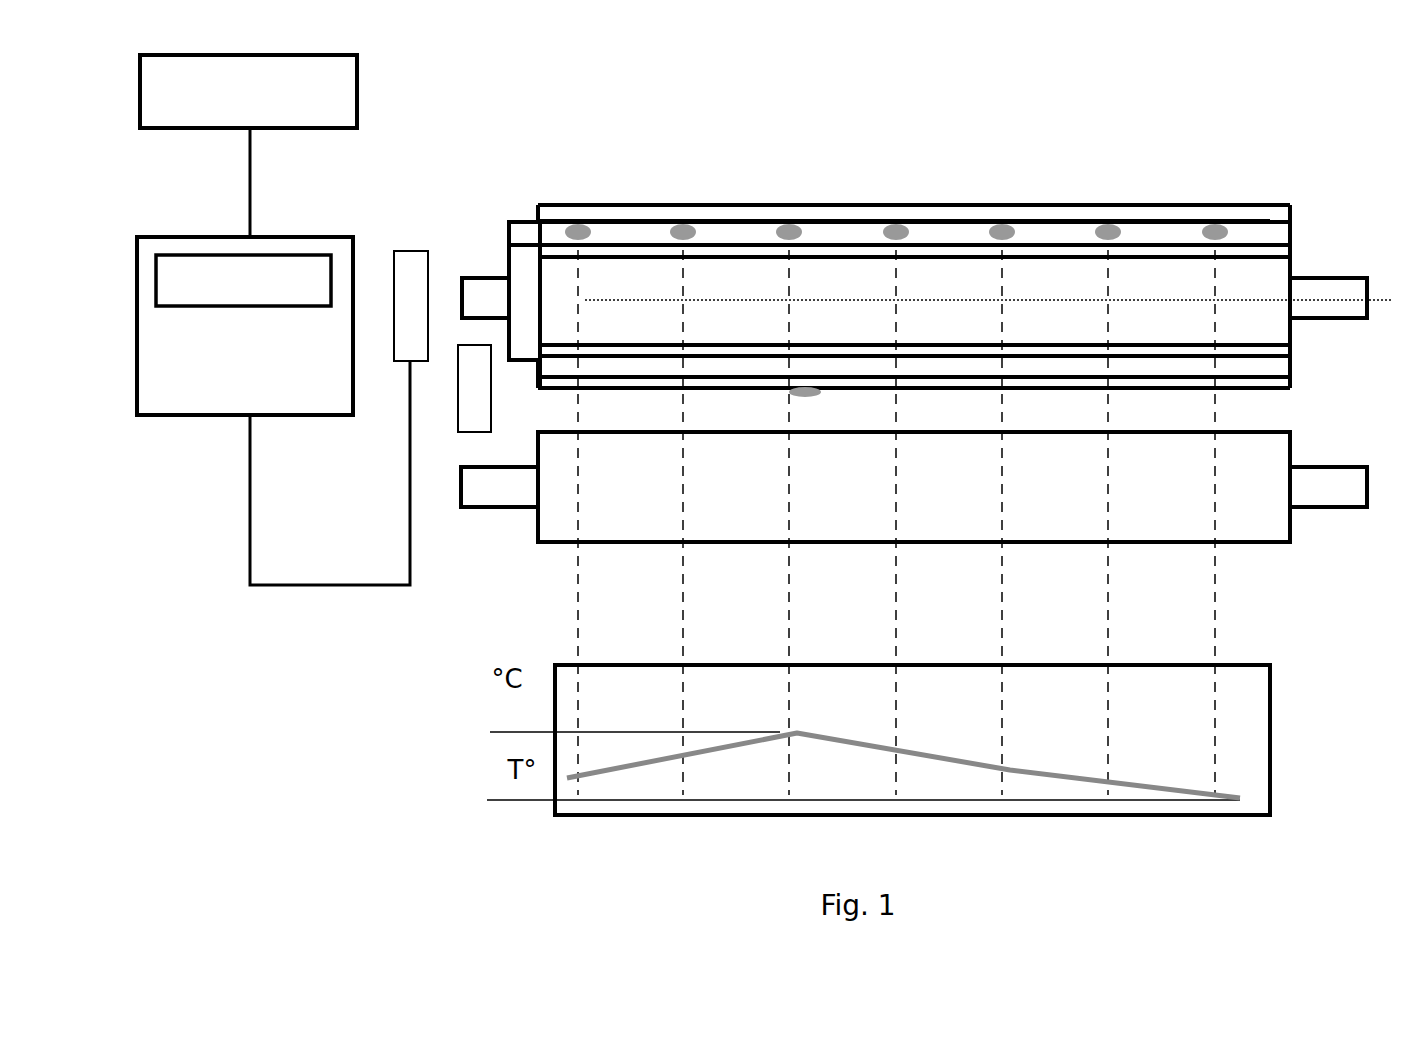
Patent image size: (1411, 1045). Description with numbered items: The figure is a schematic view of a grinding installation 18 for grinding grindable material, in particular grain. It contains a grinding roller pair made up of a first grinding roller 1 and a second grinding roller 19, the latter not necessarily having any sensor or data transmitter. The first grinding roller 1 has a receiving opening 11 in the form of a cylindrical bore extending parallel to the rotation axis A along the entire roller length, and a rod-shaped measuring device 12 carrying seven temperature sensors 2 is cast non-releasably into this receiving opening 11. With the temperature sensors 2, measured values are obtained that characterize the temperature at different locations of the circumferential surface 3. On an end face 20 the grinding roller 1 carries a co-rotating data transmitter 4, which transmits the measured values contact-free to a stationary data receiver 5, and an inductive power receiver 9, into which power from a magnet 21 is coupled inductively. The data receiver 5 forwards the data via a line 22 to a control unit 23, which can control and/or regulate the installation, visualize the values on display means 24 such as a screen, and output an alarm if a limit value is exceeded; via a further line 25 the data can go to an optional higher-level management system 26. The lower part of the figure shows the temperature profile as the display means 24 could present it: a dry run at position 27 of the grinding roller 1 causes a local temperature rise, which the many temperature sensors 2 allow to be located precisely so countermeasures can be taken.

The first grinding roller 1 is at (1302, 267).
The temperature sensors 2 is at (777, 220).
The circumferential surface 3 is at (945, 207).
The data transmitter 4 is at (528, 263).
The data receiver 5 is at (408, 263).
The inductive power receiver 9 is at (527, 337).
The receiving opening 11 is at (1248, 242).
The measuring device 12 is at (1045, 232).
The grinding installation 18 is at (1320, 190).
The second grinding roller 19 is at (1298, 447).
The end face 20 is at (506, 202).
The magnet 21 is at (470, 403).
The line 22 is at (330, 585).
The control unit 23 is at (278, 376).
The display means 24 is at (268, 272).
The further line 25 is at (250, 184).
The higher-level management system 26 is at (332, 92).
The position 27 is at (810, 396).
The rotation axis A is at (993, 283).